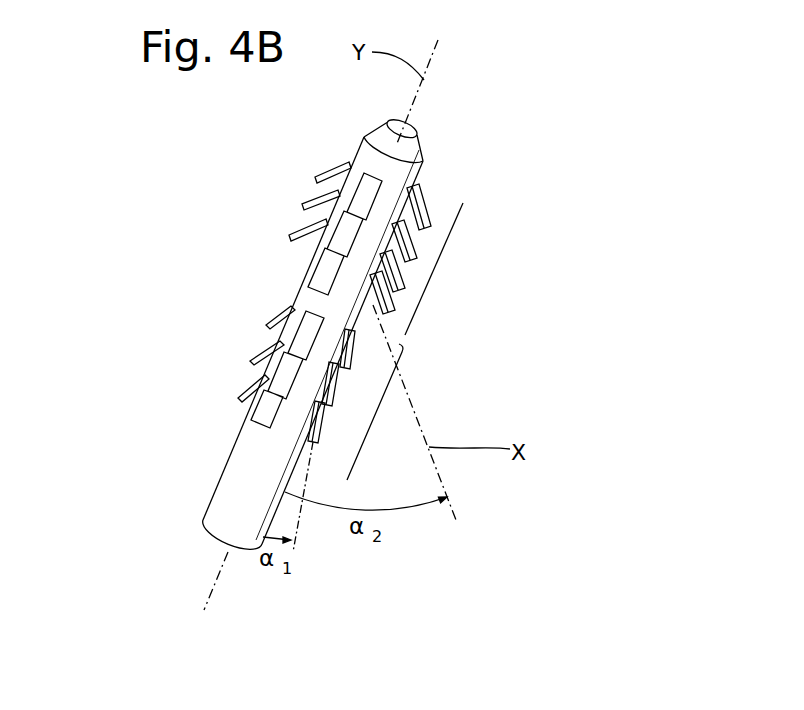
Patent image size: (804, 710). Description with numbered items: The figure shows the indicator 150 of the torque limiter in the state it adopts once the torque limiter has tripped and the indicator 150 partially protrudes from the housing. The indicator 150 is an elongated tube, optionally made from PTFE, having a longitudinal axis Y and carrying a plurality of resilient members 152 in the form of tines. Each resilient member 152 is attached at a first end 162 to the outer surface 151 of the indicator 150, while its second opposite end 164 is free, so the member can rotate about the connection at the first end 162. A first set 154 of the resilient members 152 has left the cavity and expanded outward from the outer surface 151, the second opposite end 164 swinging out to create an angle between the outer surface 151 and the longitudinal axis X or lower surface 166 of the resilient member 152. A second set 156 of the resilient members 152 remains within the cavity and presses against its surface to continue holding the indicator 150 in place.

The indicator 150 is at (177, 326).
The outer surface 151 is at (237, 471).
The resilient members 152 is at (316, 178).
The first set 154 is at (437, 266).
The second set 156 is at (377, 415).
The first end 162 is at (430, 188).
The second opposite end 164 is at (428, 232).
The lower surface 166 is at (377, 308).